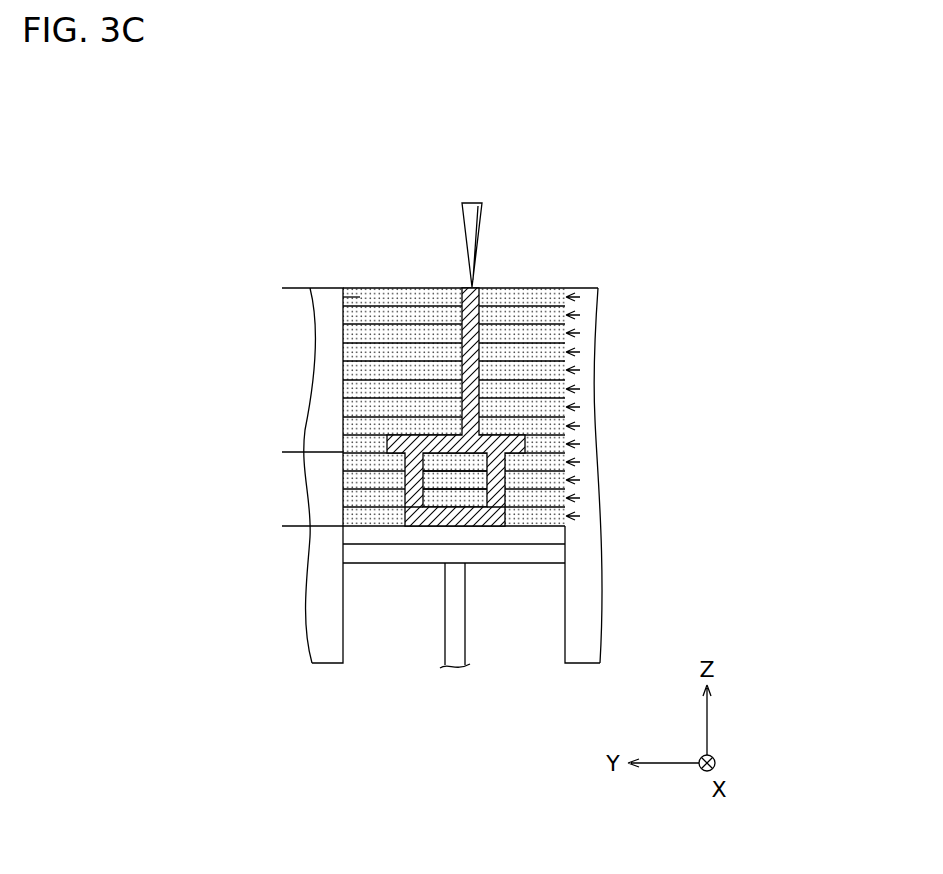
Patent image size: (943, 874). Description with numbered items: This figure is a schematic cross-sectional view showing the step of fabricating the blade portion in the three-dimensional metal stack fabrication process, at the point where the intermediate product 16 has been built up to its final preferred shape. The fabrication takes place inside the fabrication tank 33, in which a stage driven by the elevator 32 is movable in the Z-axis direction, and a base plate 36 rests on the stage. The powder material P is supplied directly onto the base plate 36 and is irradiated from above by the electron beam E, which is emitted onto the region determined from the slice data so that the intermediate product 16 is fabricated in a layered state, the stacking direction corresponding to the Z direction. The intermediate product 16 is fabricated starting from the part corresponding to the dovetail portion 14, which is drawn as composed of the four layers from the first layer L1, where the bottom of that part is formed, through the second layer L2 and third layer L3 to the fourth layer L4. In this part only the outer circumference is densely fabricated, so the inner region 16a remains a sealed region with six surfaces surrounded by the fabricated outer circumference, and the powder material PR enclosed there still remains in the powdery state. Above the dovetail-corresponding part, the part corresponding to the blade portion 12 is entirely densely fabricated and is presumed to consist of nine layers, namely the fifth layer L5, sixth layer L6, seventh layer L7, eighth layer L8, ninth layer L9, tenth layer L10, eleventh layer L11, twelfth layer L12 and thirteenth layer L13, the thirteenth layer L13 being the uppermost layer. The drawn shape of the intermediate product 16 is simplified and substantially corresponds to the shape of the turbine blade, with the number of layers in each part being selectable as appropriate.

The blade portion 12 is at (282, 288).
The dovetail portion 14 is at (282, 457).
The intermediate product 16 is at (458, 297).
The inner region 16a is at (485, 500).
The elevator 32 is at (453, 632).
The fabrication tank 33 is at (590, 623).
The base plate 36 is at (353, 534).
The powder material P is at (378, 297).
The powder material remaining in the inner region PR is at (437, 500).
The electron beam E is at (477, 230).
The first layer L1 is at (580, 516).
The second layer L2 is at (580, 498).
The third layer L3 is at (580, 480).
The fourth layer L4 is at (580, 462).
The fifth layer L5 is at (580, 444).
The sixth layer L6 is at (580, 426).
The seventh layer L7 is at (580, 407).
The eighth layer L8 is at (580, 389).
The ninth layer L9 is at (580, 370).
The tenth layer L10 is at (580, 352).
The eleventh layer L11 is at (580, 333).
The twelfth layer L12 is at (580, 315).
The thirteenth layer L13 is at (580, 297).